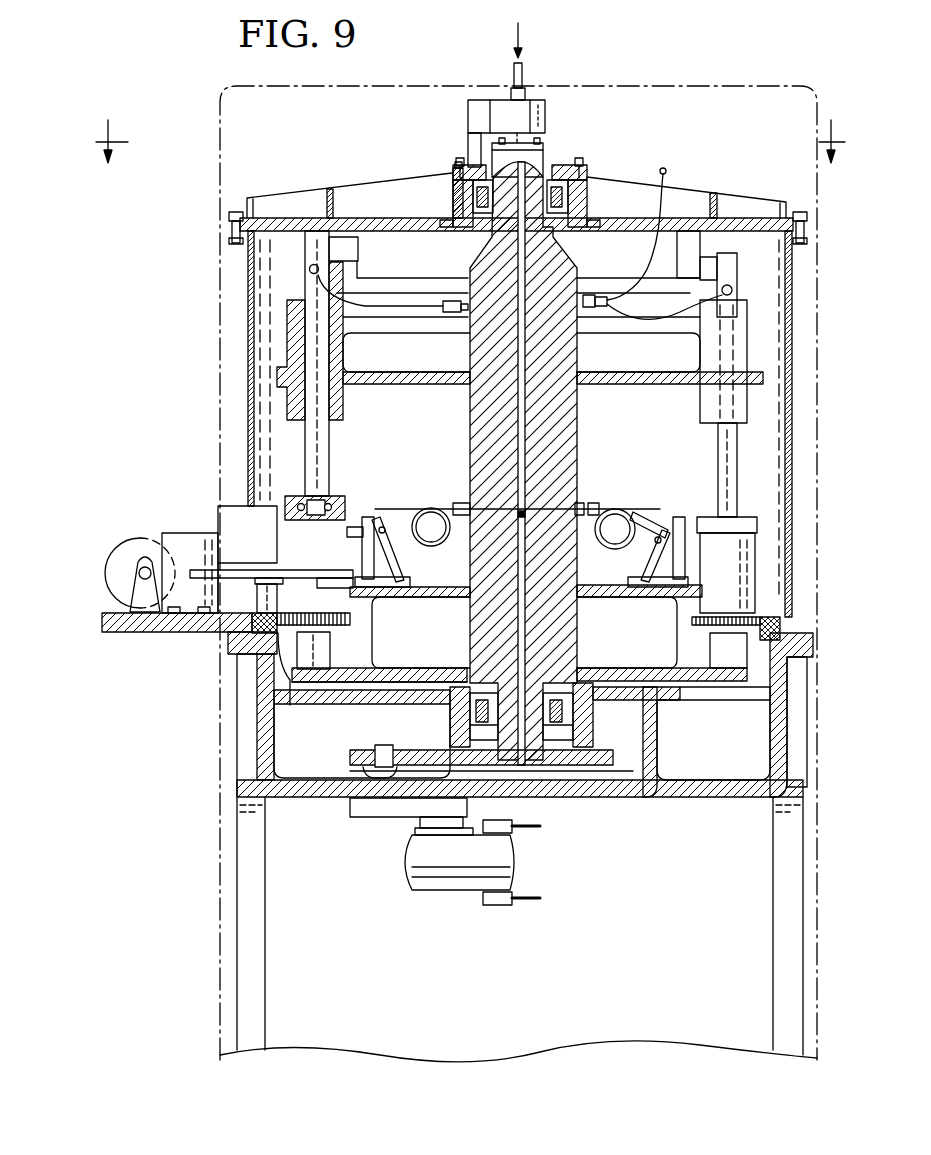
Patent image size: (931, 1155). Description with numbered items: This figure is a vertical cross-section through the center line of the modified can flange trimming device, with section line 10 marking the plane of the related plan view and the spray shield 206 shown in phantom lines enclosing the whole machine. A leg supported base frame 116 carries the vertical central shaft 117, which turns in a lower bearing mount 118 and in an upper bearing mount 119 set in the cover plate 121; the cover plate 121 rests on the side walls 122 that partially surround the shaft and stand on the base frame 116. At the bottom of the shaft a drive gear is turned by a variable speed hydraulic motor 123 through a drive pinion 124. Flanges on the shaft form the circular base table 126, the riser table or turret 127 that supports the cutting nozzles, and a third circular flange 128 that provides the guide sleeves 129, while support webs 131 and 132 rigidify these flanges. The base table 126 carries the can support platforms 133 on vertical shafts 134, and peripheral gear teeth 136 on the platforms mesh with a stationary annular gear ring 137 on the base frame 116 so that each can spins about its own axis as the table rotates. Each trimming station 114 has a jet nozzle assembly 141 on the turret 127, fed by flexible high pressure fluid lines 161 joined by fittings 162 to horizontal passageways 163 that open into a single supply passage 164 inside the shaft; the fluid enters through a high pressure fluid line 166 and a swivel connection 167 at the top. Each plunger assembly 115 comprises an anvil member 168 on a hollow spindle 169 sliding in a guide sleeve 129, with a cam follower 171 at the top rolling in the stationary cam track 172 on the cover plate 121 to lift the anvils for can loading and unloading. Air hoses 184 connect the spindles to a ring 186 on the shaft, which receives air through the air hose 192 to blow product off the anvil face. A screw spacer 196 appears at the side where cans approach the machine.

The section line 10 is at (470, 157).
The trimming station 114 is at (707, 495).
The plunger assembly 115 is at (283, 482).
The base frame 116 is at (255, 713).
The central shaft 117 is at (563, 440).
The lower bearing mount 118 is at (477, 707).
The upper bearing mount 119 is at (583, 188).
The cover plate 121 is at (362, 216).
The side walls 122 is at (615, 752).
The hydraulic motor 123 is at (410, 870).
The drive pinion 124 is at (363, 750).
The base table 126 is at (412, 667).
The turret 127 is at (440, 588).
The third circular flange 128 is at (370, 382).
The guide sleeve 129 is at (287, 350).
The support web 131 is at (653, 661).
The support web 132 is at (676, 361).
The can support platform 133 is at (700, 620).
The vertical shaft 134 is at (320, 652).
The peripheral gear teeth 136 is at (350, 617).
The annular gear ring 137 is at (290, 704).
The jet nozzle assembly 141 is at (385, 496).
The high pressure fluid line 161 is at (637, 512).
The fitting 162 is at (588, 504).
The horizontal passageway 163 is at (545, 503).
The supply passage 164 is at (525, 404).
The high pressure fluid line 166 is at (527, 63).
The swivel connection 167 is at (532, 135).
The anvil member 168 is at (337, 500).
The spindle 169 is at (318, 443).
The cam follower 171 is at (358, 247).
The cam track 172 is at (438, 264).
The air hose 184 is at (403, 308).
The ring 186 is at (580, 316).
The air hose 192 is at (667, 175).
The screw spacer 196 is at (150, 533).
The spray shield 206 is at (216, 166).